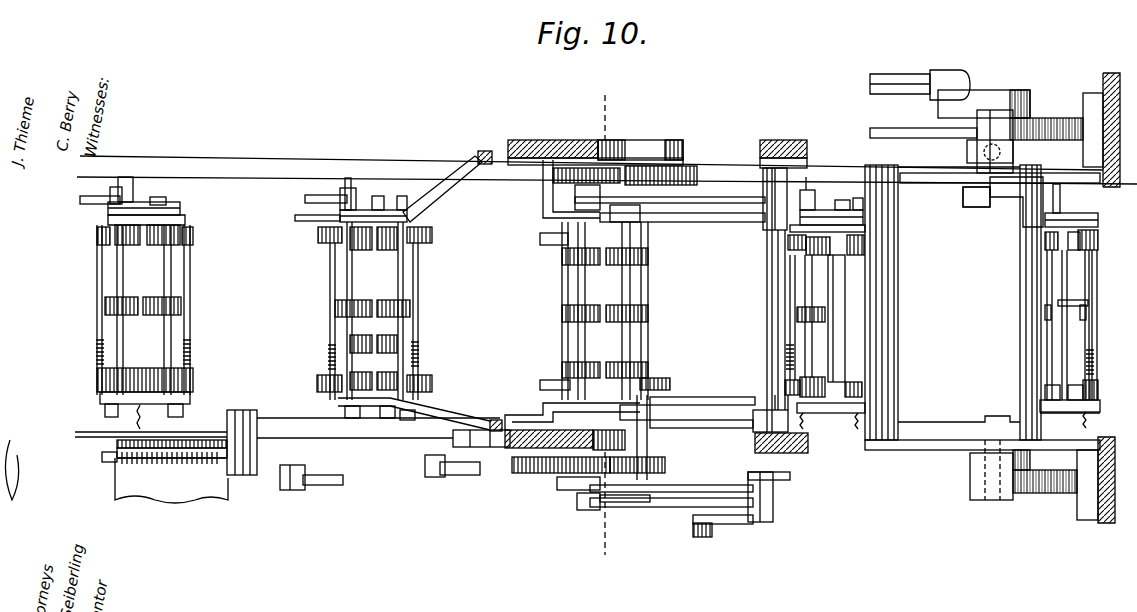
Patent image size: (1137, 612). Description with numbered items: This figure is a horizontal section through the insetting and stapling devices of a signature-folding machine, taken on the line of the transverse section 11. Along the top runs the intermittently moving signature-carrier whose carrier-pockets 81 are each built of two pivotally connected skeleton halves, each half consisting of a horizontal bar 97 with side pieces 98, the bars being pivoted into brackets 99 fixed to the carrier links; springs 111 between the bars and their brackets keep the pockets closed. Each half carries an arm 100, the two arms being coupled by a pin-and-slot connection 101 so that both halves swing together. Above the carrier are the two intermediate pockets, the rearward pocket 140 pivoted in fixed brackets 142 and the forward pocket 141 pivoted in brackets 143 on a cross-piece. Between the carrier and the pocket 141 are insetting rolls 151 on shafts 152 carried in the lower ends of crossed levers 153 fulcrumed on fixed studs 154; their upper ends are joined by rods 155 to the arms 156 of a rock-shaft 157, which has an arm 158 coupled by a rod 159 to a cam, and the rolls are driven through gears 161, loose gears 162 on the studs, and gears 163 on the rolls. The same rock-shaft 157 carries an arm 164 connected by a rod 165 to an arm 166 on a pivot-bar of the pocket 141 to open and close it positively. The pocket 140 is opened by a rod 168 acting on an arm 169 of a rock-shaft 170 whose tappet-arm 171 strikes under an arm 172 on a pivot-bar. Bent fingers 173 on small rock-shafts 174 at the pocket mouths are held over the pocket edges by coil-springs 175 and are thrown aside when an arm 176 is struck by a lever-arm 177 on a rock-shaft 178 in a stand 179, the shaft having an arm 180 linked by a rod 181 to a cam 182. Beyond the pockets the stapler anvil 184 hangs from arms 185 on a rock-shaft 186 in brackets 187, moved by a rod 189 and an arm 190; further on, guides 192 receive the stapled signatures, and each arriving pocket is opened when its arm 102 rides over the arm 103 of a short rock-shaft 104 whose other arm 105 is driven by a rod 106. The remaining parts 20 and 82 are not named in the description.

The section line 11 is at (604, 324).
The wall 20 is at (1105, 85).
The pocket 81 is at (601, 310).
The rail 82 is at (275, 156).
The horizontal bar 97 is at (164, 340).
The side pieces 98 is at (105, 307).
The brackets 99 is at (185, 220).
The arm 100 is at (838, 212).
The pin and slot connection 101 is at (150, 206).
The rearwardly-projecting arm 102 is at (80, 200).
The arm 103 is at (1000, 212).
The short rock-shaft 104 is at (975, 207).
The arm 105 is at (967, 150).
The rod 106 is at (892, 128).
The springs 111 is at (138, 405).
The rearward intermediate pocket 140 is at (372, 252).
The forward intermediate pocket 141 is at (600, 308).
The fixed brackets 142 is at (455, 180).
The brackets 143 is at (548, 220).
The rolls 151 is at (655, 372).
The shafts 152 is at (564, 333).
The crossed levers 153 is at (625, 145).
The fixed studs 154 is at (600, 150).
The rods 155 is at (705, 222).
The arms 156 is at (768, 200).
The rock-shaft 157 is at (770, 315).
The arm 158 is at (735, 524).
The rod 159 is at (702, 537).
The gears 161 is at (690, 165).
The loose gears 162 is at (580, 185).
The gears 163 is at (553, 185).
The arm 164 is at (758, 412).
The rod 165 is at (695, 397).
The arm 166 is at (660, 422).
The rod 168 is at (460, 476).
The arm 169 is at (430, 478).
The rock-shaft 170 is at (465, 428).
The tappet-arm 171 is at (407, 420).
The arm 172 is at (387, 418).
The bent fingers 173 is at (100, 236).
The small rock-shafts 174 is at (102, 330).
The coil-springs 175 is at (97, 355).
The arm 176 is at (105, 408).
The lever-arm 177 is at (272, 418).
The rock-shaft 178 is at (235, 480).
The stand 179 is at (130, 458).
The arm 180 is at (248, 478).
The rod 181 is at (320, 487).
The cam 182 is at (195, 470).
The anvil 184 is at (872, 302).
The arms 185 is at (940, 183).
The rock-shaft 186 is at (1020, 305).
The brackets 187 is at (1040, 122).
The rod 189 is at (888, 74).
The arm 190 is at (965, 100).
The guides 192 is at (1062, 245).